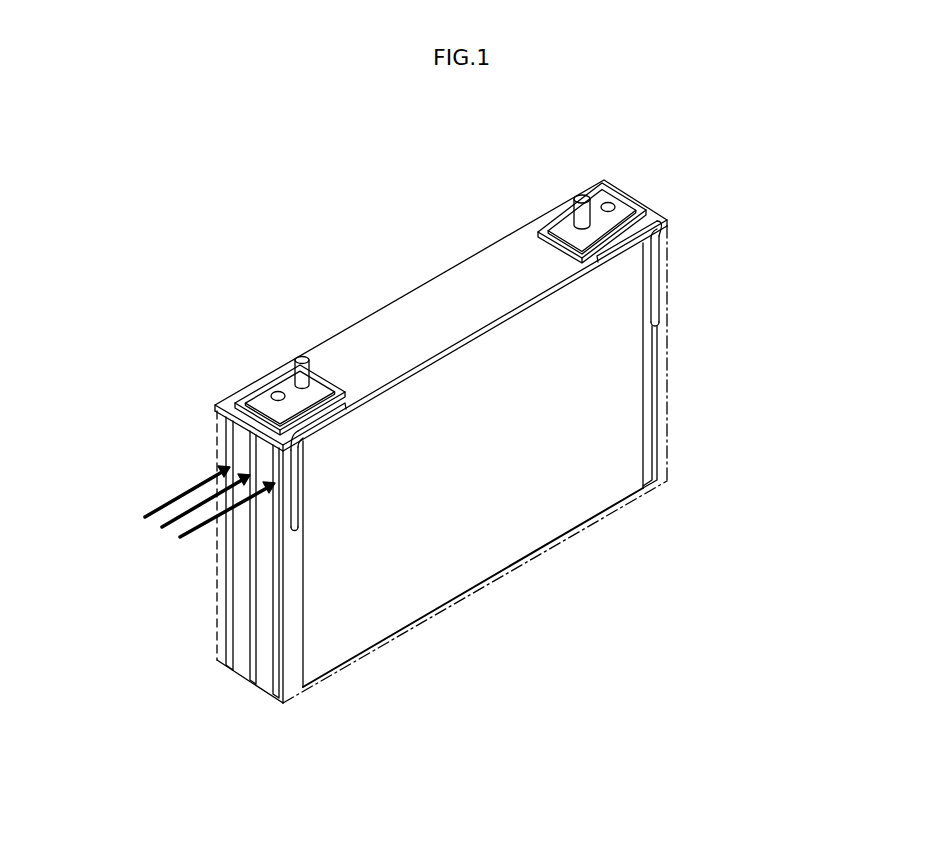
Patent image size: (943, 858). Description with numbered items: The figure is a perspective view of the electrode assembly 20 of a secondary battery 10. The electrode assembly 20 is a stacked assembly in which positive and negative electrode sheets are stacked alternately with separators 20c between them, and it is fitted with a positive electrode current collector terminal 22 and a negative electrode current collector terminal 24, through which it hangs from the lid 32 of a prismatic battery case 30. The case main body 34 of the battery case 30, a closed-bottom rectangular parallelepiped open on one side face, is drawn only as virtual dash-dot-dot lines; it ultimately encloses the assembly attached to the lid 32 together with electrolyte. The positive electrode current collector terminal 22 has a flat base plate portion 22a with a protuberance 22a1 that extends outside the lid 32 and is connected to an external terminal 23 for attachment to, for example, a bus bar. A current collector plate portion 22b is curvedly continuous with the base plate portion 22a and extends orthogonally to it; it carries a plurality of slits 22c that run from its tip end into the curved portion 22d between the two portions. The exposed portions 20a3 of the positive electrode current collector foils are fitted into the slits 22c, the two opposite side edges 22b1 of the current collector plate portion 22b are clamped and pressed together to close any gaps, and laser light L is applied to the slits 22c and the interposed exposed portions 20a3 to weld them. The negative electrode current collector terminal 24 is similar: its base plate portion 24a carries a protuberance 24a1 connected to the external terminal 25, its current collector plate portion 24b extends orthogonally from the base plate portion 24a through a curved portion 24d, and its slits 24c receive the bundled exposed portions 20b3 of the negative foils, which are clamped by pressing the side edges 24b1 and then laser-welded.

The secondary battery 10 is at (272, 251).
The electrode assembly 20 is at (451, 490).
The exposed portion 20a3 is at (230, 578).
The exposed portion 20b3 is at (658, 410).
The separator 20c is at (395, 610).
The positive electrode current collector terminal 22 is at (266, 465).
The base plate portion 22a is at (335, 425).
The protuberance 22a1 is at (276, 392).
The current collector plate portion 22b is at (226, 425).
The side edges 22b1 is at (226, 455).
The slits 22c is at (226, 446).
The curved portion 22d is at (300, 452).
The external terminal 23 is at (276, 365).
The negative electrode current collector terminal 24 is at (660, 292).
The base plate portion 24a is at (605, 270).
The protuberance 24a1 is at (612, 204).
The current collector plate portion 24b is at (660, 283).
The side edges 24b1 is at (657, 315).
The slits 24c is at (646, 295).
The curved portion 24d is at (662, 236).
The external terminal 25 is at (600, 204).
The battery case 30 is at (497, 441).
The lid 32 is at (445, 287).
The case main body 34 is at (670, 468).
The laser light L is at (153, 510).